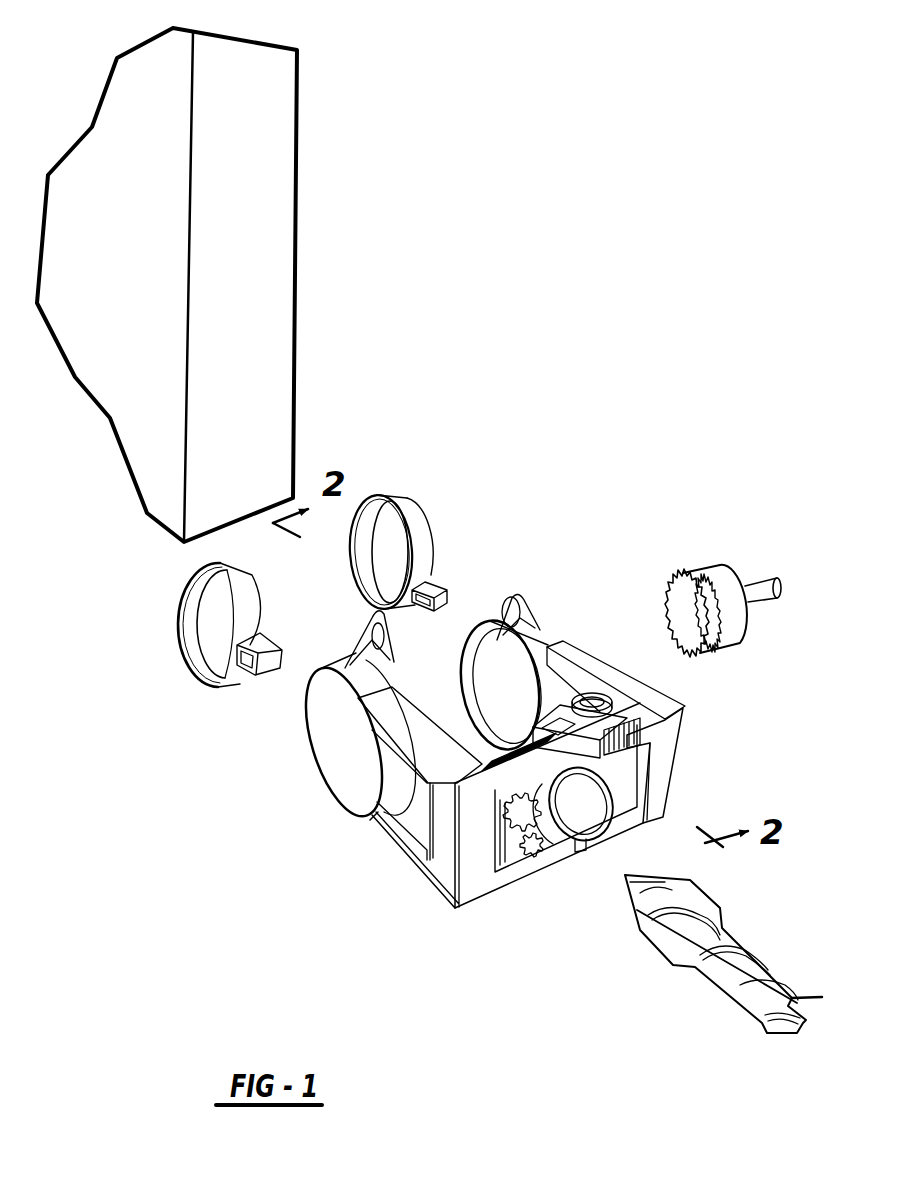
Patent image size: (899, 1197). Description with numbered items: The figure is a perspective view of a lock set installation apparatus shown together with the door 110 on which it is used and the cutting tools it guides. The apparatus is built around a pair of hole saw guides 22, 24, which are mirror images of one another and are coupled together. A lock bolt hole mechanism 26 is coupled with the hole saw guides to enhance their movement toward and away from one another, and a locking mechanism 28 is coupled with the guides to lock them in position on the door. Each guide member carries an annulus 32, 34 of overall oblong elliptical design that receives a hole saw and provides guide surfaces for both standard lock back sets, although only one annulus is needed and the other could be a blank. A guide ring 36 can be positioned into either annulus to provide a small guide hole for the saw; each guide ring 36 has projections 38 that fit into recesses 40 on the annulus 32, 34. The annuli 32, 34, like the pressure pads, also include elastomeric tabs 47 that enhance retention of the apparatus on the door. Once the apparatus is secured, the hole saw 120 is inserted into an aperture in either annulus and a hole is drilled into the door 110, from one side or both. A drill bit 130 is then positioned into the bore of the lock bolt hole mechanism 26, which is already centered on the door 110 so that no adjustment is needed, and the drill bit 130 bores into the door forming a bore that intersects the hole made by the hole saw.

The door 110 is at (300, 340).
The hole saw 120 is at (727, 563).
The drill bit 130 is at (723, 960).
The hole saw guide 22 is at (422, 893).
The hole saw guide 24 is at (684, 755).
The lock bolt hole mechanism 26 is at (578, 847).
The locking mechanism 28 is at (626, 706).
The annulus 32 is at (333, 803).
The annulus 34 is at (553, 633).
The guide ring 36 is at (436, 507).
The projection 38 is at (350, 537).
The recess 40 is at (463, 660).
The elastomeric tab 47 is at (393, 648).